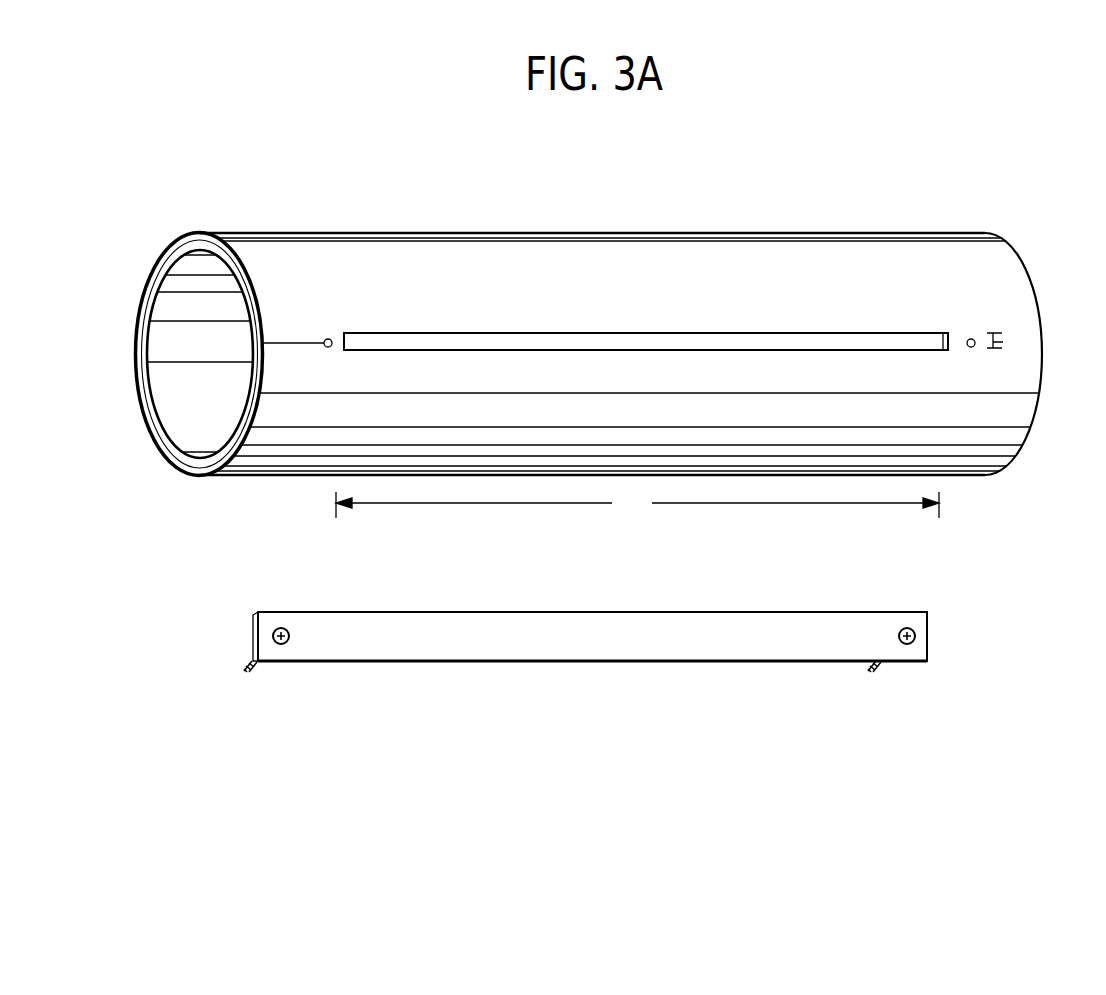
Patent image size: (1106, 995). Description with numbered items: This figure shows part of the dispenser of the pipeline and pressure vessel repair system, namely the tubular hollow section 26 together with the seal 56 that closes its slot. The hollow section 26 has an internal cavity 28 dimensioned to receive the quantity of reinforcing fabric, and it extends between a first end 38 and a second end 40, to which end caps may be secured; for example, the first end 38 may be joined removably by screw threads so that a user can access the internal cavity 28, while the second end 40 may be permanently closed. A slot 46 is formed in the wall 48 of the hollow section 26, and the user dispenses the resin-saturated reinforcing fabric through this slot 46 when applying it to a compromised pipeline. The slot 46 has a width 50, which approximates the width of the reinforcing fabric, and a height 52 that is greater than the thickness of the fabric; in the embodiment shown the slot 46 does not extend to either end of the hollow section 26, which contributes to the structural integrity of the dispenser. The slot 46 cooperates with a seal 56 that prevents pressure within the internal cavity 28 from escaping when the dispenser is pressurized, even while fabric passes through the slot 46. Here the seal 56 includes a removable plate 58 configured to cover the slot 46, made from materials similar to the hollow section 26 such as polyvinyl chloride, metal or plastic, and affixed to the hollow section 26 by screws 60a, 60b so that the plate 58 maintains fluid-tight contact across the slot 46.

The hollow section 26 is at (755, 263).
The internal cavity 28 is at (192, 393).
The first end 38 is at (162, 270).
The second end 40 is at (1027, 272).
The slot 46 is at (443, 333).
The wall 48 is at (563, 258).
The width 50 is at (621, 543).
The height 52 is at (1003, 343).
The seal 56 is at (627, 691).
The removable plate 58 is at (523, 636).
The screw 60a is at (290, 637).
The screw 60b is at (915, 636).